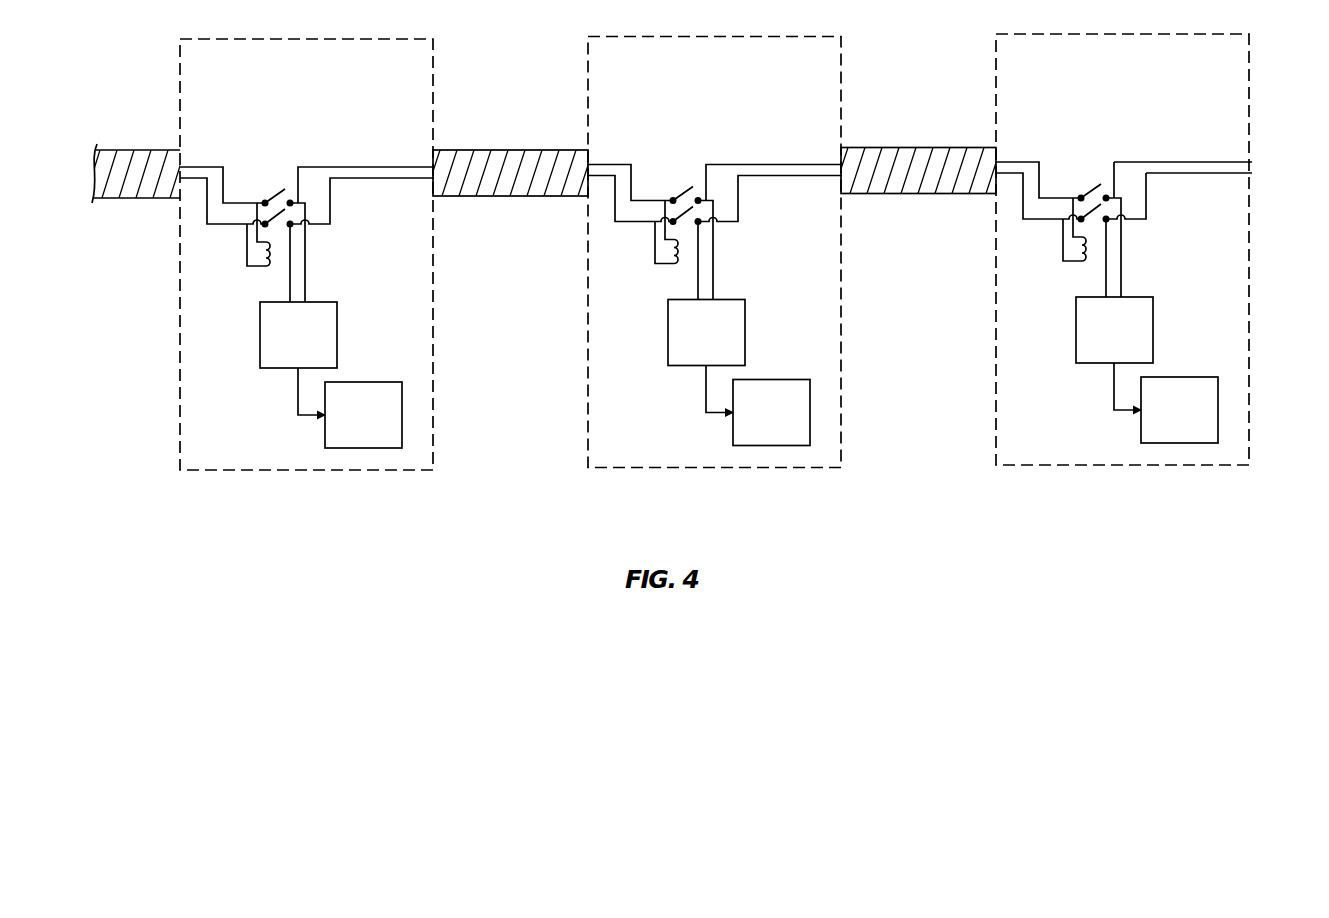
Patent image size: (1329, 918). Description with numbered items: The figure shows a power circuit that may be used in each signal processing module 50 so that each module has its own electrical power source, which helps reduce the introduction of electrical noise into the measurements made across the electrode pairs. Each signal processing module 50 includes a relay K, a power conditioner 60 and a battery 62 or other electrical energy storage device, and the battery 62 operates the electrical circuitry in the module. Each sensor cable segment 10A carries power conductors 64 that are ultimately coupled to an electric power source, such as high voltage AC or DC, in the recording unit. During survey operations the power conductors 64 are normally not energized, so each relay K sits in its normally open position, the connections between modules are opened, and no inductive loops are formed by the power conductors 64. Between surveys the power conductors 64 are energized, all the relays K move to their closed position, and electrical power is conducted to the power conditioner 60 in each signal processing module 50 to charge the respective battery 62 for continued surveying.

The sensor cable segment 10A is at (133, 150).
The signal processing module 50 is at (297, 39).
The relay K is at (243, 246).
The power conditioner 60 is at (260, 335).
The battery 62 is at (325, 432).
The power conductors 64 is at (1252, 166).